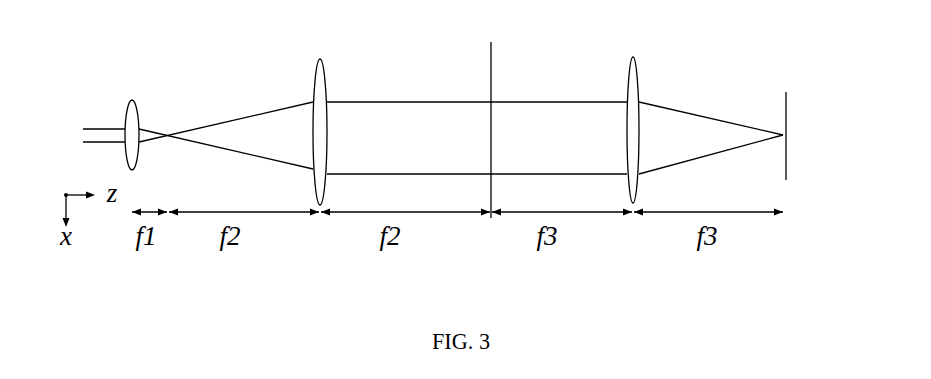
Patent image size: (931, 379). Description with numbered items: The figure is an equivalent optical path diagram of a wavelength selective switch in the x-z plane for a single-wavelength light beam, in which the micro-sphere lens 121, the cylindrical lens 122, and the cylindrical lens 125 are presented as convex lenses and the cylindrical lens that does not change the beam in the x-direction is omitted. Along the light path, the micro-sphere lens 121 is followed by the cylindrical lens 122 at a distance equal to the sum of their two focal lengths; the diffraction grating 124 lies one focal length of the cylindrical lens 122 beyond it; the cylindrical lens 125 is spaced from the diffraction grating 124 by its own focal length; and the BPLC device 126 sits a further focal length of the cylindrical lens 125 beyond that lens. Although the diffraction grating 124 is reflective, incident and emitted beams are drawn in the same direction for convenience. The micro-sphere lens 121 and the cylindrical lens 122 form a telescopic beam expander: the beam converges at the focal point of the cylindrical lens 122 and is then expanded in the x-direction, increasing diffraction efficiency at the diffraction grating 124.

The micro-sphere lens 121 is at (131, 108).
The cylindrical lens 122 is at (308, 107).
The diffraction grating 124 is at (492, 113).
The cylindrical lens 125 is at (633, 106).
The BPLC device 126 is at (786, 109).